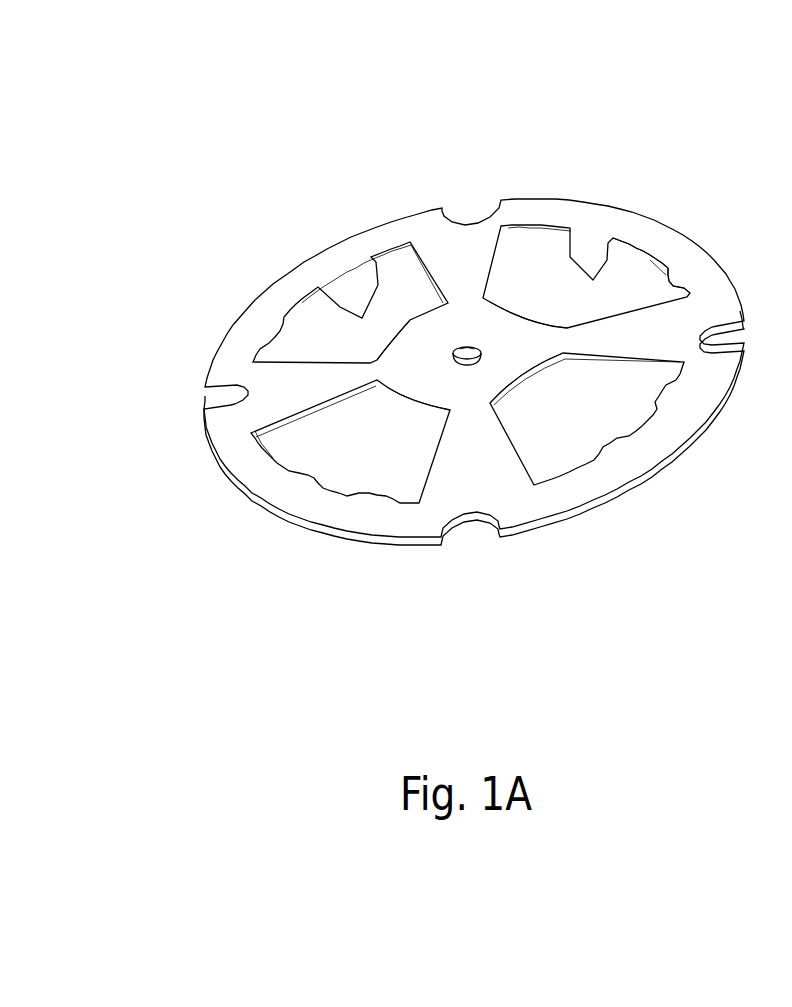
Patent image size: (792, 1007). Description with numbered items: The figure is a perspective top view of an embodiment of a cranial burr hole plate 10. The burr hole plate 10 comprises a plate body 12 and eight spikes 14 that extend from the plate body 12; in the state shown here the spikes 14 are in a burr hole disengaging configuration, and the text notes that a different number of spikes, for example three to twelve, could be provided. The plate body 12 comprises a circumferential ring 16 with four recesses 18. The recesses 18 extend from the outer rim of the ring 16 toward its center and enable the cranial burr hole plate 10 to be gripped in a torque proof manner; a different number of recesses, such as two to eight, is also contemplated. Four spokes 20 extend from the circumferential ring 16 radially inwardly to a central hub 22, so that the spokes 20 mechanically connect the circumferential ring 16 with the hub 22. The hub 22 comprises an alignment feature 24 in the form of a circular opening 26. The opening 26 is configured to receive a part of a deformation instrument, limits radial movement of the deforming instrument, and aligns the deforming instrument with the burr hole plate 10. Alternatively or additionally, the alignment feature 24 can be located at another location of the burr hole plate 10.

The cranial burr hole plate 10 is at (312, 112).
The plate body 12 is at (504, 226).
The spikes 14 is at (587, 258).
The circumferential ring 16 is at (640, 235).
The recesses 18 is at (222, 410).
The spokes 20 is at (298, 388).
The central hub 22 is at (433, 382).
The alignment feature 24 is at (464, 340).
The circular opening 26 is at (468, 361).